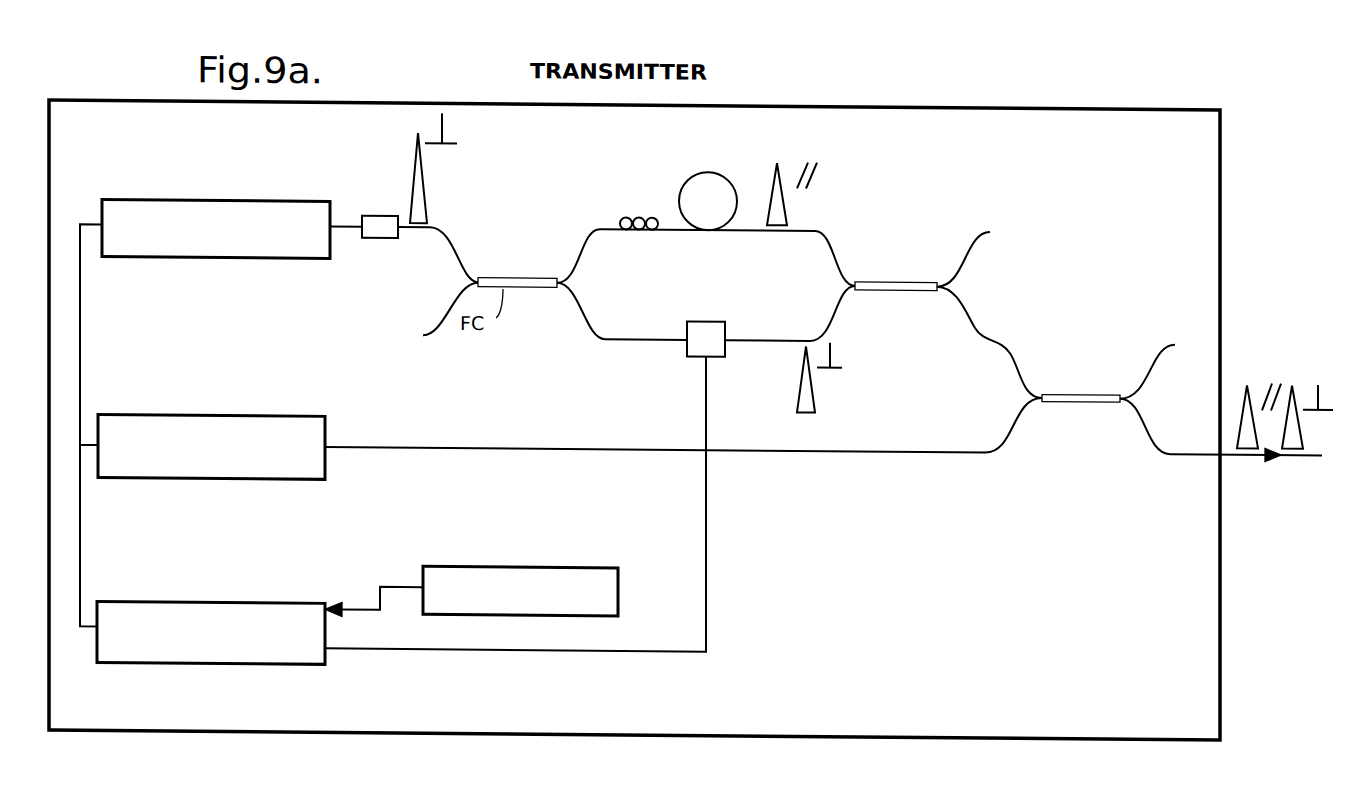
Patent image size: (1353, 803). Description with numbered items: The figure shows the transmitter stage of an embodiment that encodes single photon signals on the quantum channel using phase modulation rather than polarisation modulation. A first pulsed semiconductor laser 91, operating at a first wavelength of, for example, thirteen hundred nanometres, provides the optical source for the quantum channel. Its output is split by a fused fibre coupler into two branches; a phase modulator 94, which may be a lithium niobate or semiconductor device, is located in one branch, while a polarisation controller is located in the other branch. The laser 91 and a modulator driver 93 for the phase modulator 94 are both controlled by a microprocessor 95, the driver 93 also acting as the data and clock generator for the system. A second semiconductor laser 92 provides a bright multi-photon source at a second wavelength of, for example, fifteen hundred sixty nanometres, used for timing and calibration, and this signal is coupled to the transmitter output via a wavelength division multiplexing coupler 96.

The first pulsed semiconductor laser 91 is at (138, 199).
The second semiconductor laser 92 is at (328, 428).
The modulator driver 93 is at (288, 601).
The phase modulator 94 is at (687, 352).
The microprocessor 95 is at (621, 577).
The WDM coupler 96 is at (1095, 385).